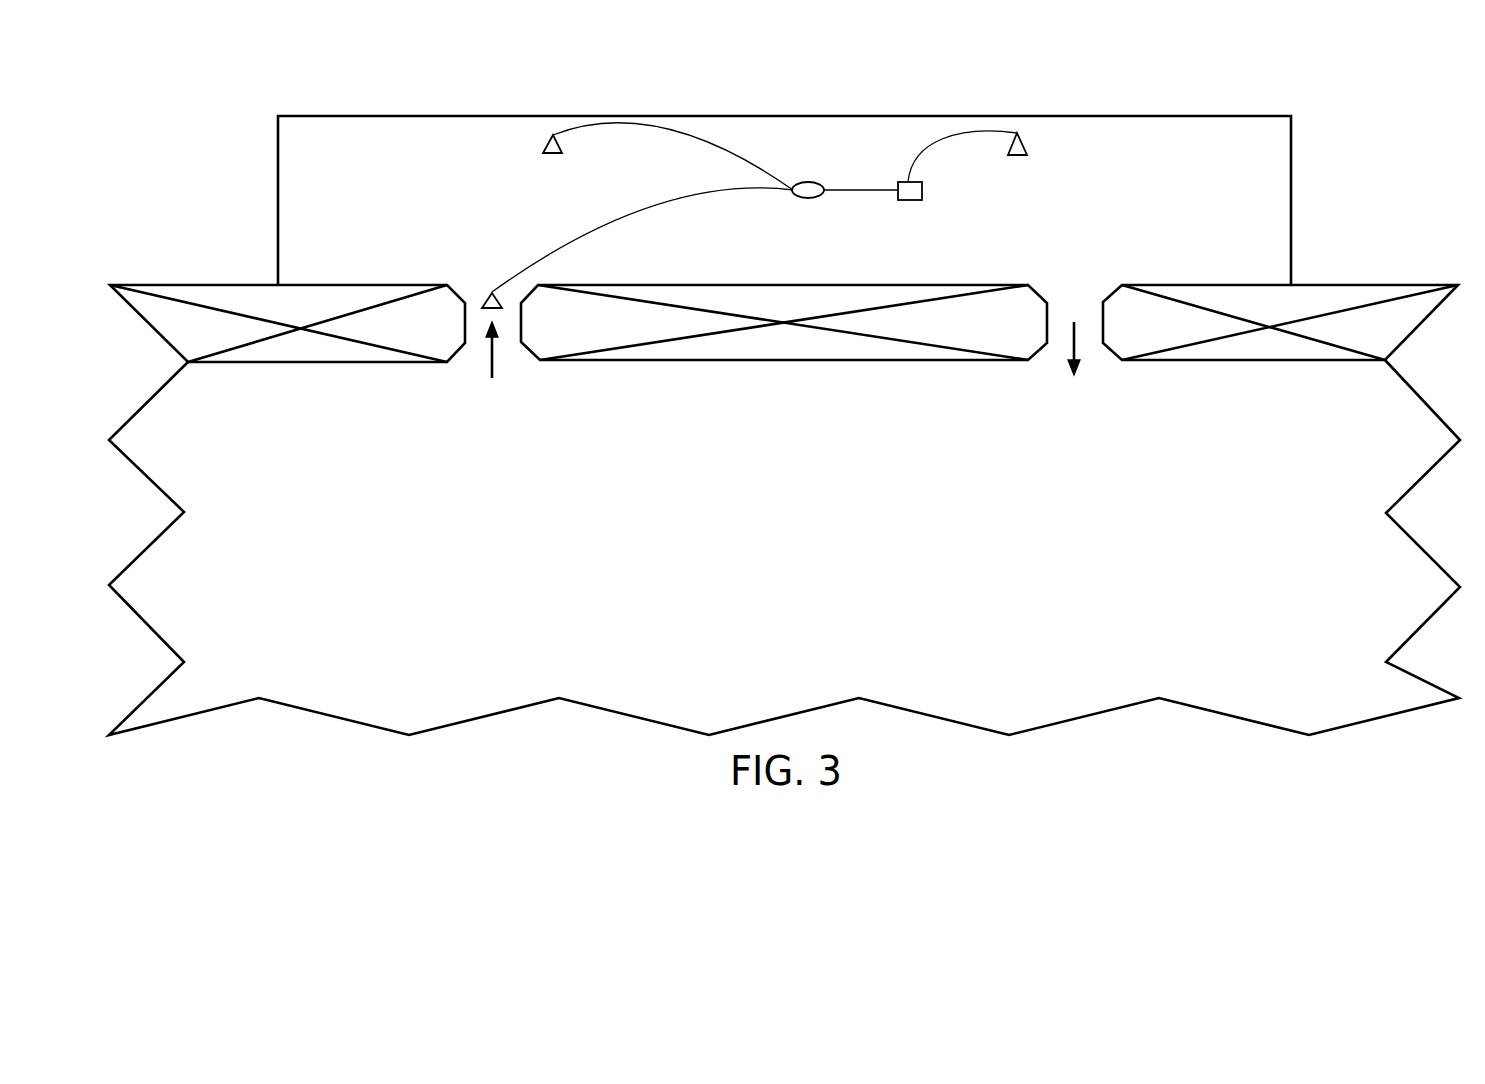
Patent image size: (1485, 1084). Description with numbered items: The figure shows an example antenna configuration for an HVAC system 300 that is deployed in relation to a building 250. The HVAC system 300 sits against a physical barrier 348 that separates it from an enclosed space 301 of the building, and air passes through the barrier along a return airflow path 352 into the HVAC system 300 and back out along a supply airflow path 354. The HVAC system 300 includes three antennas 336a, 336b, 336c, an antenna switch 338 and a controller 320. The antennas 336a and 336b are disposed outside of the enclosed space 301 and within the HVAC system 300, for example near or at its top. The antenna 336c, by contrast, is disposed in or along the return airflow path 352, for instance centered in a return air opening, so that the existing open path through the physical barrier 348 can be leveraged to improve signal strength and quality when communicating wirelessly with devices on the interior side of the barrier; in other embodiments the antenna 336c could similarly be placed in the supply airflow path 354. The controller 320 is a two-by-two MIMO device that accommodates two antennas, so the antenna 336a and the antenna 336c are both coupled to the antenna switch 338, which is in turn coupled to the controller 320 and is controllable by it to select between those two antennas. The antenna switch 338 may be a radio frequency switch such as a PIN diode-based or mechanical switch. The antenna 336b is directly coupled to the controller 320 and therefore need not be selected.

The building 250 is at (196, 137).
The HVAC system 300 is at (1255, 116).
The enclosed space 301 is at (209, 407).
The controller 320 is at (923, 188).
The antenna 336a is at (543, 153).
The antenna 336b is at (1027, 153).
The antenna 336c is at (487, 302).
The antenna switch 338 is at (820, 197).
The physical barrier 348 is at (240, 303).
The return airflow path 352 is at (521, 361).
The supply airflow path 354 is at (1101, 360).